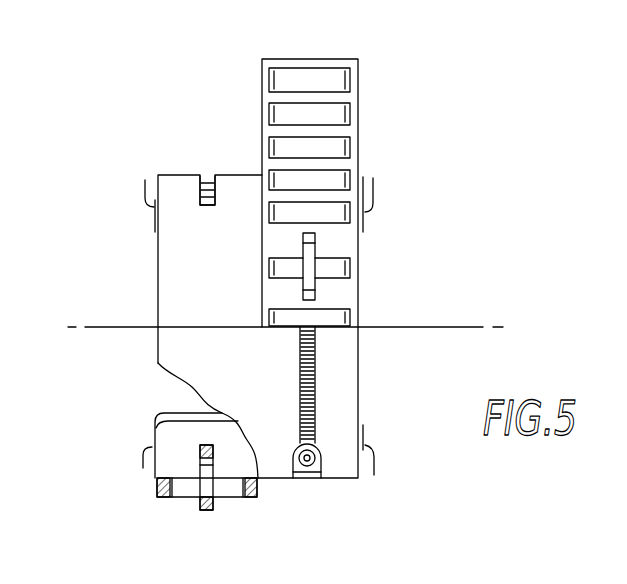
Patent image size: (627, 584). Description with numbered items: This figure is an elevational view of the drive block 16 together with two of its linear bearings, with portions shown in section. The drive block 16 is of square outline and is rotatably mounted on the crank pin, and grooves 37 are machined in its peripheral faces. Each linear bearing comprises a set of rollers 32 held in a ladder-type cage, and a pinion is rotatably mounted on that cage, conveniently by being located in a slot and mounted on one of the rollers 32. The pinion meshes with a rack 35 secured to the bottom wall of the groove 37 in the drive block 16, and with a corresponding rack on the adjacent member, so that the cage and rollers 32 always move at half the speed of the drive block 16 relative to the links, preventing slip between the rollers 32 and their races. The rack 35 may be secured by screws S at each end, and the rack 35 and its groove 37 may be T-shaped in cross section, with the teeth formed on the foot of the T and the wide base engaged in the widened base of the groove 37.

The drive block 16 is at (178, 262).
The rollers 32 is at (332, 82).
The rack 35 is at (310, 385).
The groove 37 is at (207, 172).
The screws S is at (308, 462).